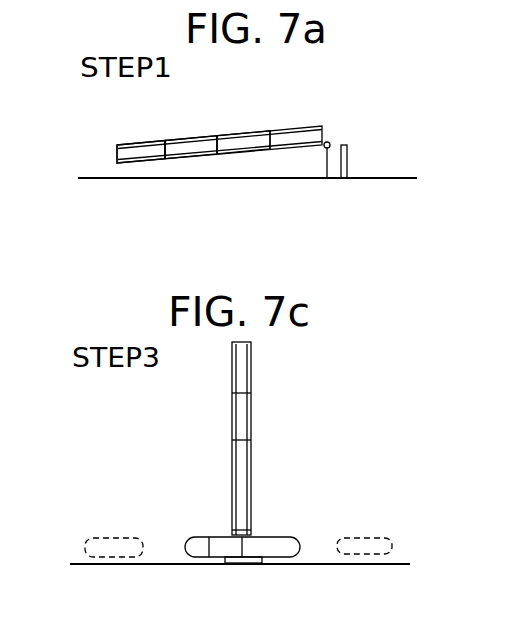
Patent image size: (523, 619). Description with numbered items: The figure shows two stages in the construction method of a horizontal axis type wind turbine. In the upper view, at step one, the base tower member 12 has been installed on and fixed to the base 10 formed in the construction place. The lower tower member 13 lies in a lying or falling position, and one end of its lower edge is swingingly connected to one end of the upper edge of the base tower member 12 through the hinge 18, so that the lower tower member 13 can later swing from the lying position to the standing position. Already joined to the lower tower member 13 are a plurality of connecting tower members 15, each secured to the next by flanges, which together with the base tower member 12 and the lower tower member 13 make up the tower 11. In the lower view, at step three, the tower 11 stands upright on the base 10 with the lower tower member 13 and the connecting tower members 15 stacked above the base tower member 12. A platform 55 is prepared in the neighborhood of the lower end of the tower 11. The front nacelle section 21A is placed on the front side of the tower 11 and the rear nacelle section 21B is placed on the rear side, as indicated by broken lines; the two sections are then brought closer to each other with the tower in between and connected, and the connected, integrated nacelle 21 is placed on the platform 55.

In FIG. 7a, the base 10 is at (128, 179).
In FIG. 7c, the base 10 is at (333, 565).
In FIG. 7c, the tower 11 is at (258, 387).
In FIG. 7a, the base tower member 12 is at (349, 166).
In FIG. 7c, the base tower member 12 is at (255, 530).
In FIG. 7a, the lower tower member 13 is at (295, 128).
In FIG. 7c, the lower tower member 13 is at (235, 505).
In FIG. 7a, the connecting tower member 15 is at (137, 150).
In FIG. 7c, the connecting tower member 15 is at (232, 367).
In FIG. 7a, the hinge 18 is at (323, 147).
In FIG. 7c, the nacelle 21 is at (278, 530).
In FIG. 7c, the front nacelle section 21A is at (108, 538).
In FIG. 7c, the rear nacelle section 21B is at (368, 538).
In FIG. 7c, the platform 55 is at (250, 558).